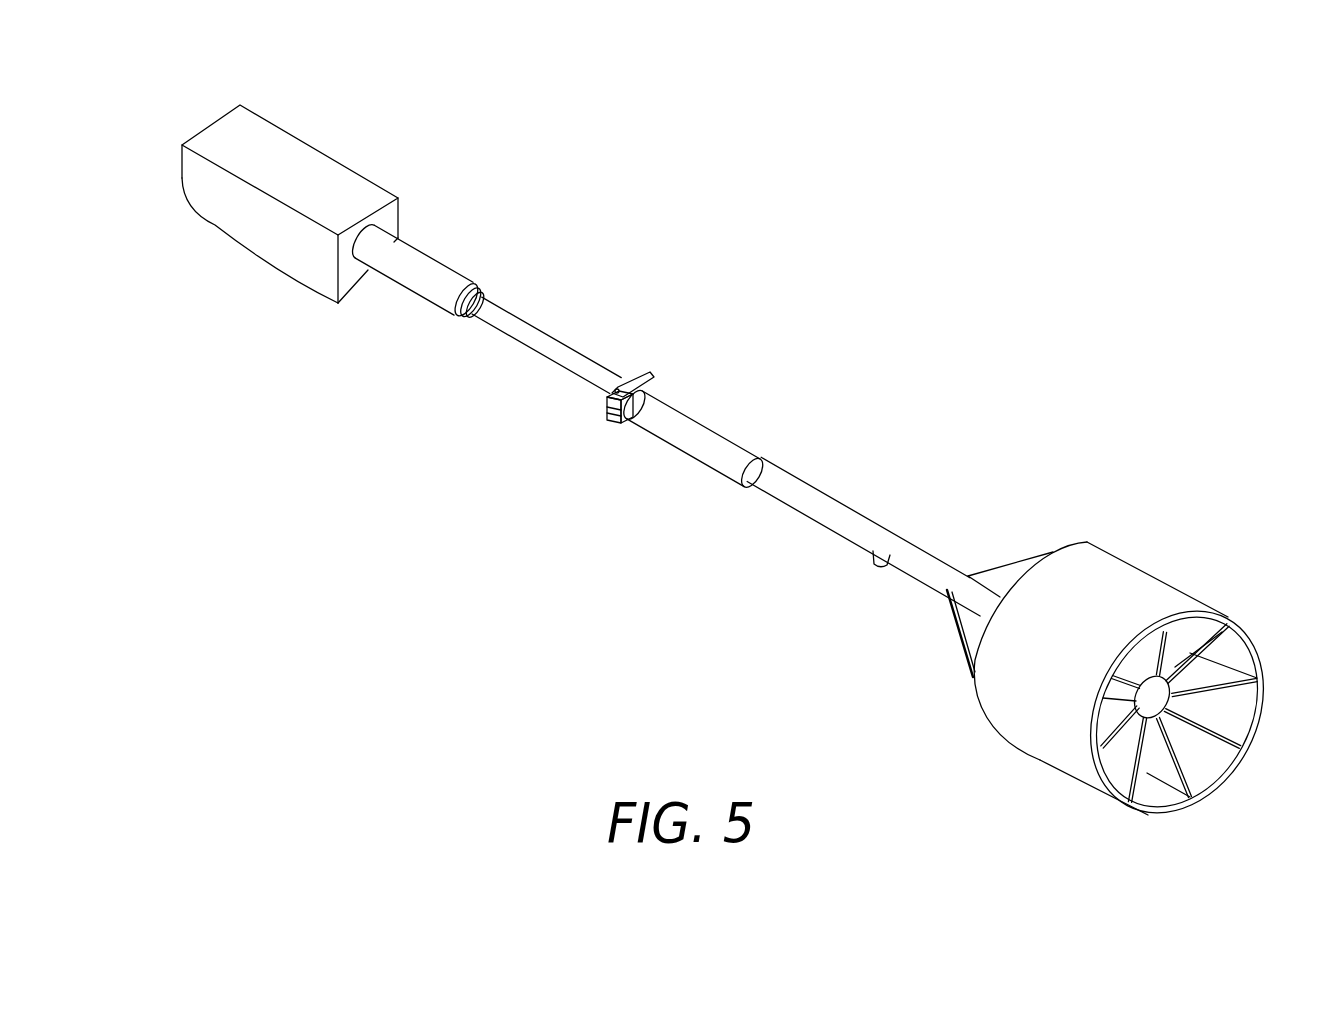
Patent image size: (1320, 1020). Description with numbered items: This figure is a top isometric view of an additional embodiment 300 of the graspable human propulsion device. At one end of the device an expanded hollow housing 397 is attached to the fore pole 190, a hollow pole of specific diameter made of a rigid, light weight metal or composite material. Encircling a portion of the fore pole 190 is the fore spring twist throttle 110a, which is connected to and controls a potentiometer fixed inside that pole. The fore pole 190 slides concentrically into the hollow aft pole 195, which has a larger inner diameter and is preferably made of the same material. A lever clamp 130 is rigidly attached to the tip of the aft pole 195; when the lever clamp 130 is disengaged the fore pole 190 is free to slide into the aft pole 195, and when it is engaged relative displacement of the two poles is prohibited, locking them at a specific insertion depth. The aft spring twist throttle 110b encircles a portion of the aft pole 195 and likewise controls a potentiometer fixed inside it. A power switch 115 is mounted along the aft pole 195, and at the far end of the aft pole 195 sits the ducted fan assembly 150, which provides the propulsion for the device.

The embodiment 3 300 is at (837, 278).
The expanded housing 397 is at (332, 160).
The fore spring twist throttle 110a is at (405, 287).
The fore pole 190 is at (507, 313).
The lever clamp 130 is at (607, 410).
The aft spring twist throttle 110b is at (680, 445).
The aft pole 195 is at (805, 480).
The power switch 115 is at (882, 567).
The ducted fan assembly 150 is at (1137, 560).